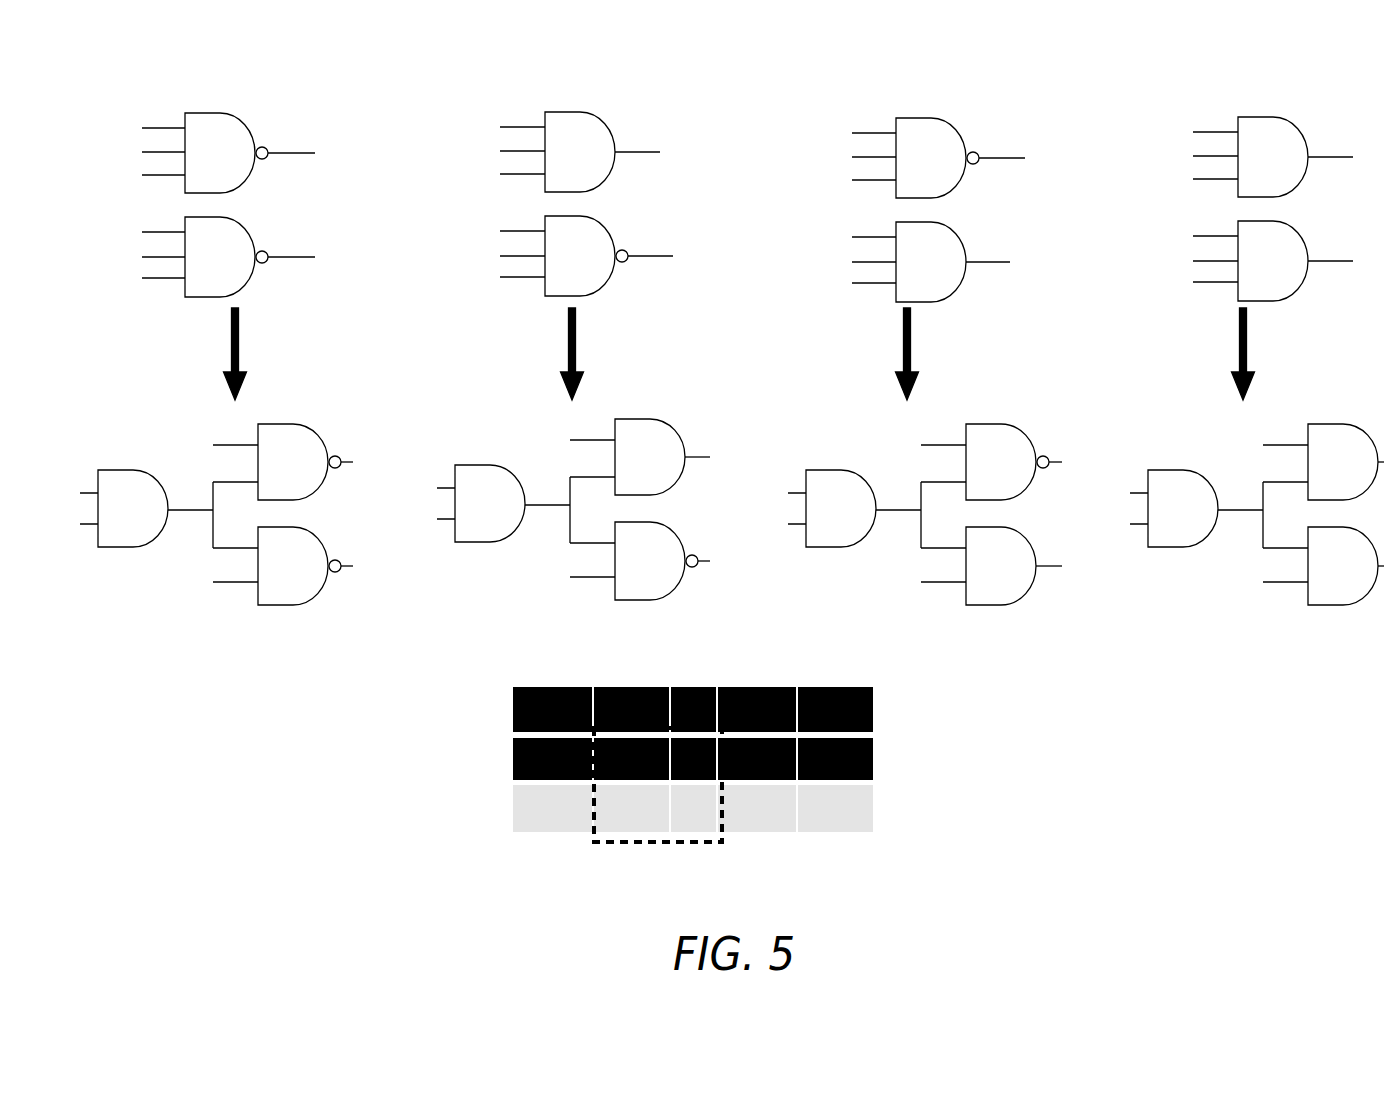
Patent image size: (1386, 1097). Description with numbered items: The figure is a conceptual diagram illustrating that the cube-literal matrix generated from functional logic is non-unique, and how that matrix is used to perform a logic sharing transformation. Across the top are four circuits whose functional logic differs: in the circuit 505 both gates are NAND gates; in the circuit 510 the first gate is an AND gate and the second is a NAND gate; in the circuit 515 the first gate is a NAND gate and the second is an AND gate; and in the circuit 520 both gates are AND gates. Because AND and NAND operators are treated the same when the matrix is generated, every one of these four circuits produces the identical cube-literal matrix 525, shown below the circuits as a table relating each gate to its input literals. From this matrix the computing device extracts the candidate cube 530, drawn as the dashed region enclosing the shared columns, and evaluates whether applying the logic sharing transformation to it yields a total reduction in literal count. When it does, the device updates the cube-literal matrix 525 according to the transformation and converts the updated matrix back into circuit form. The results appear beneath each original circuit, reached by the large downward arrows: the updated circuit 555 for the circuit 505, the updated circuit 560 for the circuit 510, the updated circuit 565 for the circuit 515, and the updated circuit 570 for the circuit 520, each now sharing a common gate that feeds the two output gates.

The circuit based on first functional logic 505 is at (157, 95).
The circuit based on second functional logic 510 is at (530, 95).
The circuit based on third functional logic 515 is at (880, 95).
The circuit based on fourth functional logic 520 is at (1225, 95).
The updated circuit 555 is at (110, 413).
The updated circuit 560 is at (483, 413).
The updated circuit 565 is at (833, 413).
The updated circuit 570 is at (1176, 413).
The cube-literal matrix 525 is at (518, 688).
The candidate cube 530 is at (596, 843).